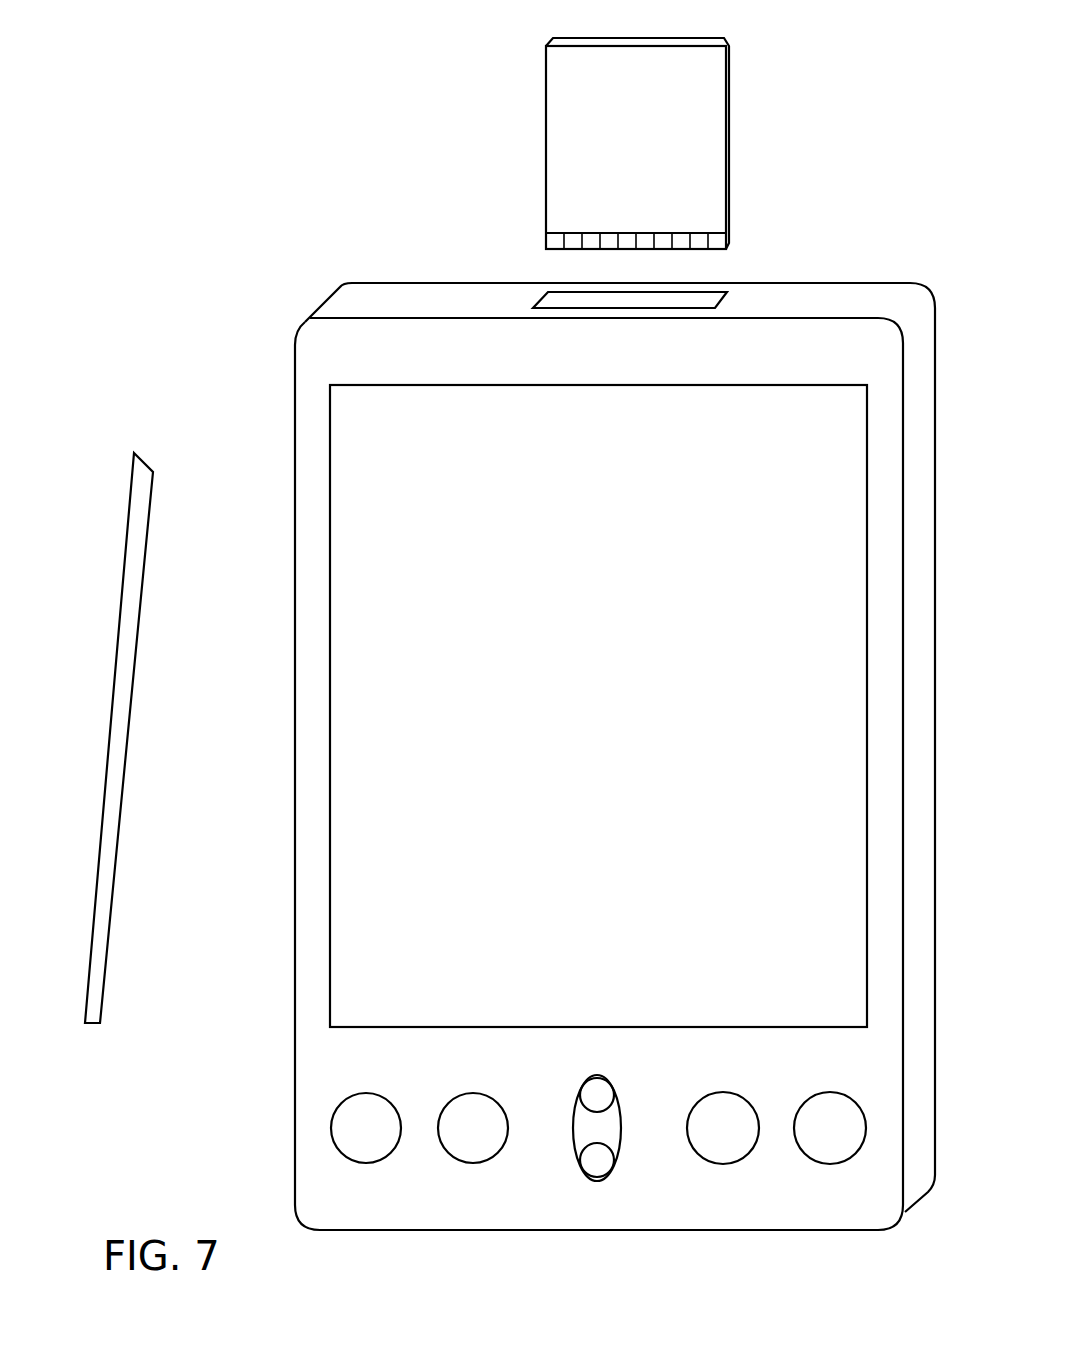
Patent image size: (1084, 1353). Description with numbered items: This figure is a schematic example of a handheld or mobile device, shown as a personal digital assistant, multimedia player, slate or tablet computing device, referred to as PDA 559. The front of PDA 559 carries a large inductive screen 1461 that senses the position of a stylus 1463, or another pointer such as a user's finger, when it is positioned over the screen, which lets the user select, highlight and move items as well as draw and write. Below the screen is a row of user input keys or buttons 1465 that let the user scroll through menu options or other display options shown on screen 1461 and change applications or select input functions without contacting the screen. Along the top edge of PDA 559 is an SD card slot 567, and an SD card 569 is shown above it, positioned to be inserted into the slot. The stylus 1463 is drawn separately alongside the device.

The personal digital assistant 559 is at (252, 517).
The SD card slot 567 is at (637, 301).
The SD card 569 is at (546, 148).
The display screen 1461 is at (575, 700).
The stylus 1463 is at (98, 1030).
The input buttons 1465 is at (347, 1119).